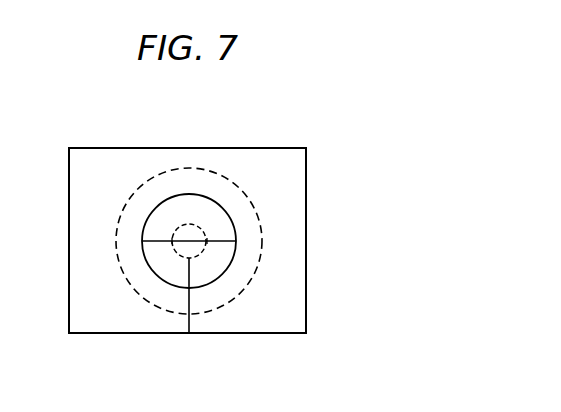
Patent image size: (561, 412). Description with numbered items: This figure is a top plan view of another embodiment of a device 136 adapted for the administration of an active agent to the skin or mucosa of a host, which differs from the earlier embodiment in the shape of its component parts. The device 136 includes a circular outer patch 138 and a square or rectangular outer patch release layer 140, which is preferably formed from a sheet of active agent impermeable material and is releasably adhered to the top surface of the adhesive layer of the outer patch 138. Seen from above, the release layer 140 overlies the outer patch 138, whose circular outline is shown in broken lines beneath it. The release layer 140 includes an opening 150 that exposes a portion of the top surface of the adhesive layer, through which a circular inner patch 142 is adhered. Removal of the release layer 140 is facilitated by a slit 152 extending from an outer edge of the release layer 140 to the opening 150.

The device 136 is at (357, 176).
The circular outer patch 138 is at (160, 172).
The outer patch release layer 140 is at (306, 240).
The circular inner patch 142 is at (210, 197).
The opening 150 is at (177, 229).
The slit 152 is at (189, 333).